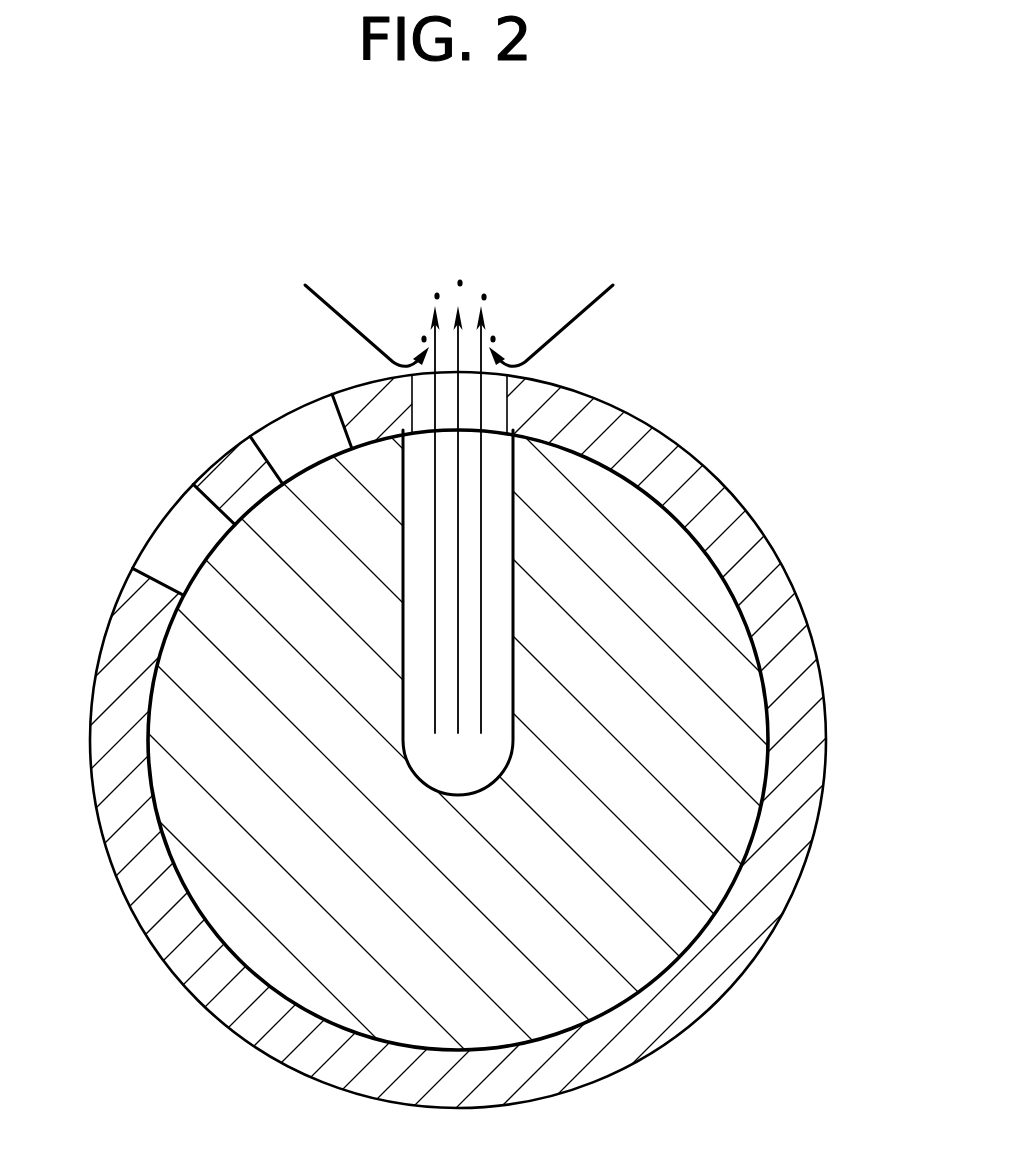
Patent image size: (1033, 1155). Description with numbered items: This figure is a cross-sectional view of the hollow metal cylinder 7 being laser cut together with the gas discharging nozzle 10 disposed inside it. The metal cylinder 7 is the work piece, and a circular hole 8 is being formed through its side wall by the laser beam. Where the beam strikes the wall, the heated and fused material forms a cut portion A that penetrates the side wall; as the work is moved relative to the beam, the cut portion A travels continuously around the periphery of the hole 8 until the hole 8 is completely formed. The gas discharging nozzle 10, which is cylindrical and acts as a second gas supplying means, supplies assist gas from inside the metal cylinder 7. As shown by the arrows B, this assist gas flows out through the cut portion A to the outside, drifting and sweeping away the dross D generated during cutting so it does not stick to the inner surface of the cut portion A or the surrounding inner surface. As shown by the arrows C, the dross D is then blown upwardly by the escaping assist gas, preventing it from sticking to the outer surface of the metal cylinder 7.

The metal cylinder 7 is at (786, 572).
The circular hole 8 is at (286, 432).
The gas discharging nozzle 10 is at (715, 885).
The cut portion A is at (418, 398).
The arrows (assist gas flow) B is at (484, 517).
The arrows (dross blown upward) C is at (592, 305).
The dross D is at (488, 294).